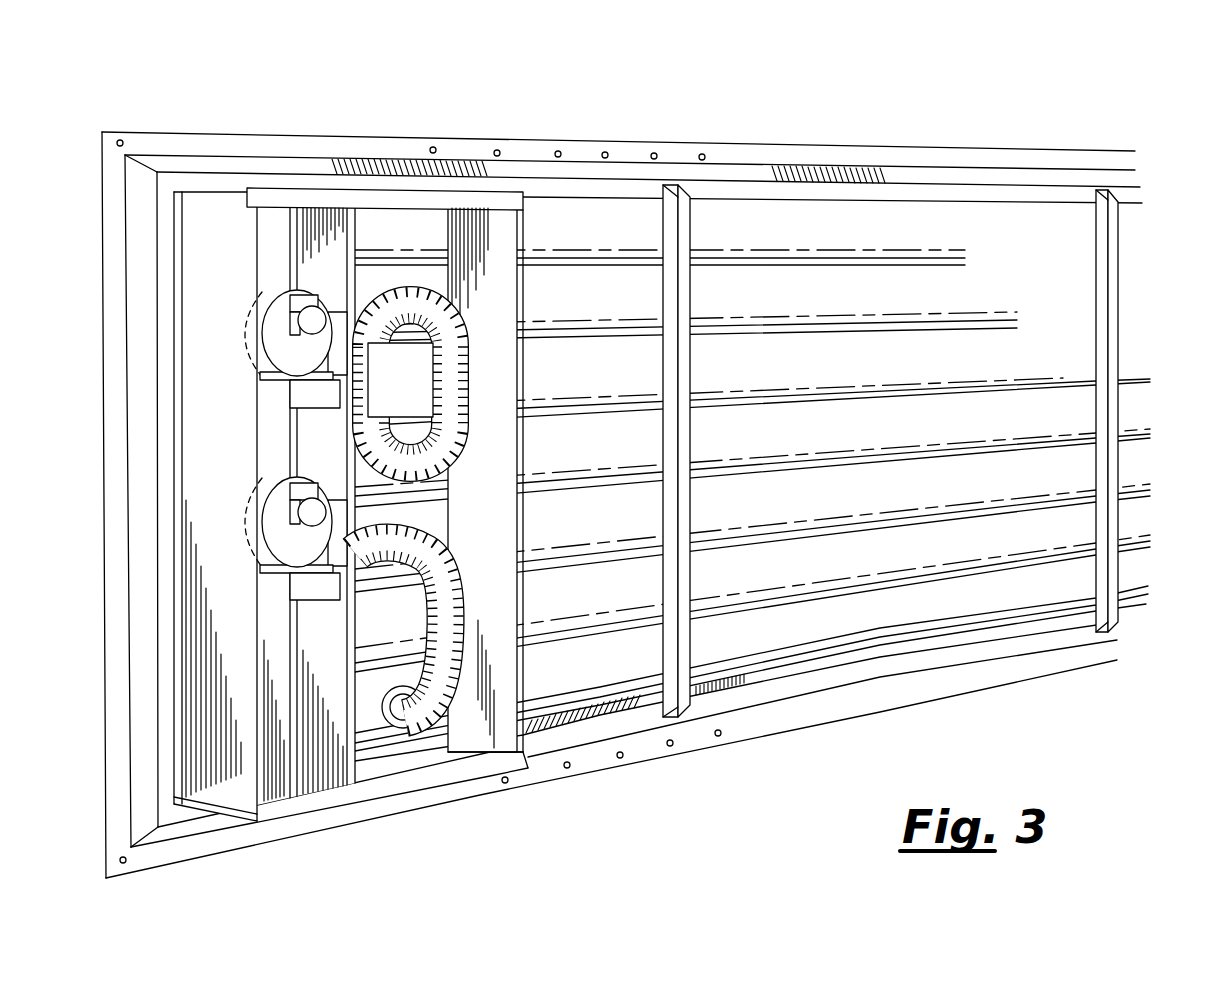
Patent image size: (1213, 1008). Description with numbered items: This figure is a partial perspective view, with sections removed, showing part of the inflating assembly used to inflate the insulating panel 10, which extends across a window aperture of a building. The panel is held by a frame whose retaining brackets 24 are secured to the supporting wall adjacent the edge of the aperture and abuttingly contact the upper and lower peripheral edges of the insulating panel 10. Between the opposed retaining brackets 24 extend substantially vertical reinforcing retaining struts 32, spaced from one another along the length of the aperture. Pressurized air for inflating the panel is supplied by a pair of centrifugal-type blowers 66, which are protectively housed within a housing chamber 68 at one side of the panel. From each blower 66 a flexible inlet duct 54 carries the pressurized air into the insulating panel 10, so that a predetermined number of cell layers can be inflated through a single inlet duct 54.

The insulating panel 10 is at (957, 237).
The retaining brackets 24 is at (748, 180).
The retaining struts 32 is at (1097, 577).
The inlet duct 54 is at (459, 369).
The centrifugal-type blowers 66 is at (281, 348).
The housing chamber 68 is at (312, 740).